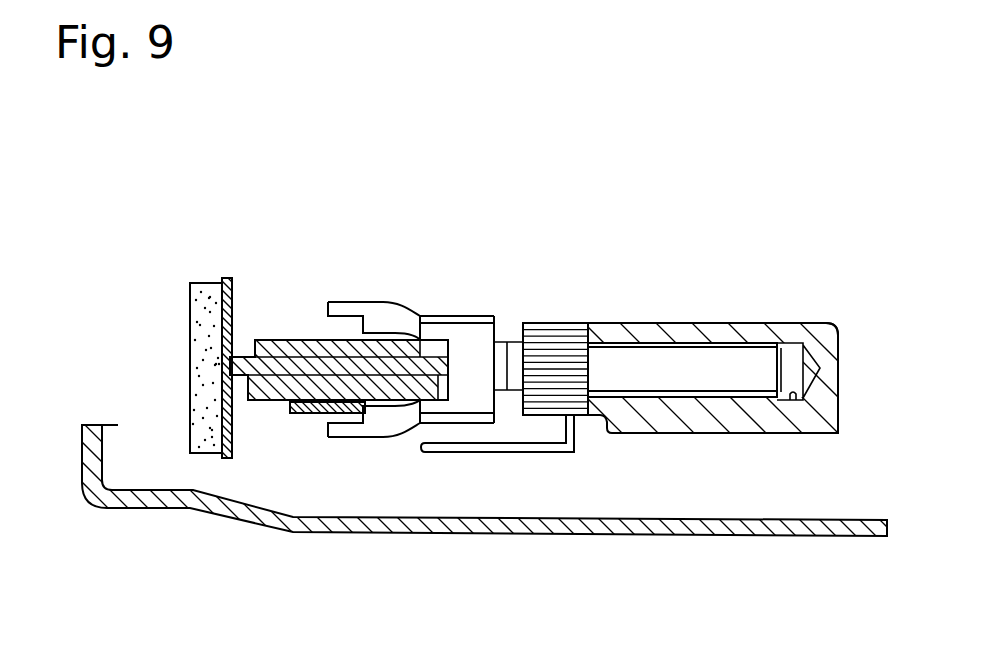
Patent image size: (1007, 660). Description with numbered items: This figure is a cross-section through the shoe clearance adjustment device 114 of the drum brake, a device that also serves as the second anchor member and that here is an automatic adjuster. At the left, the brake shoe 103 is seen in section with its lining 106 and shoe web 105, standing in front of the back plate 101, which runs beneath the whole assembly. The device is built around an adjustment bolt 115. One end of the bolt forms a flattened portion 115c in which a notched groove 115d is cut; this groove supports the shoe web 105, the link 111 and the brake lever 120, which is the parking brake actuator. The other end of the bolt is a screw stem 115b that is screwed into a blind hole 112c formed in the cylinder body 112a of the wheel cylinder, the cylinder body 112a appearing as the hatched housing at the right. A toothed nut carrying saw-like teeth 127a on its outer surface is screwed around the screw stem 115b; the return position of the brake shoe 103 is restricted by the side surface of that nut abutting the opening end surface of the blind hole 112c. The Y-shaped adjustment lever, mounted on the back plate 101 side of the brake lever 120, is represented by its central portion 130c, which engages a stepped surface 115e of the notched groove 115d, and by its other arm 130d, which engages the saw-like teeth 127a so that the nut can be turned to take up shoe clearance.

The back plate 101 is at (700, 540).
The brake shoe 103 is at (223, 307).
The shoe web 105 is at (246, 333).
The lining 106 is at (190, 340).
The link 111 is at (338, 390).
The shoe clearance adjustment device 114 is at (712, 333).
The adjustment bolt 115 is at (435, 355).
The screw stem 115b is at (748, 355).
The flattened portion 115c is at (472, 330).
The notched groove 115d is at (430, 332).
The stepped surface 115e is at (365, 428).
The cylinder body 112a is at (832, 327).
The blind hole 112c is at (793, 400).
The brake lever 120 is at (262, 398).
The saw-like teeth 127a is at (558, 323).
The central portion 130c is at (312, 414).
The other arm 130d is at (580, 435).